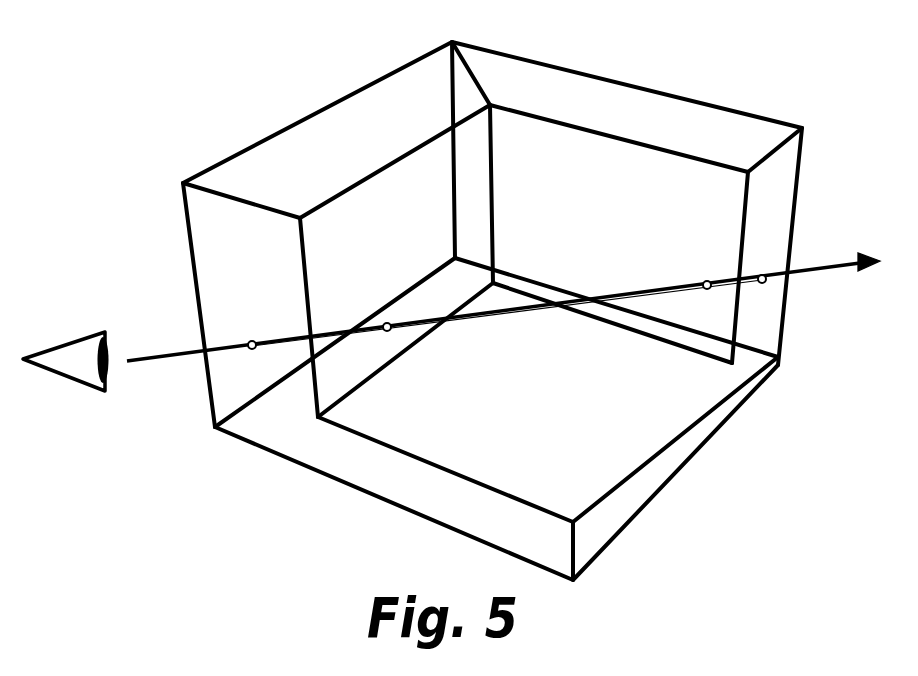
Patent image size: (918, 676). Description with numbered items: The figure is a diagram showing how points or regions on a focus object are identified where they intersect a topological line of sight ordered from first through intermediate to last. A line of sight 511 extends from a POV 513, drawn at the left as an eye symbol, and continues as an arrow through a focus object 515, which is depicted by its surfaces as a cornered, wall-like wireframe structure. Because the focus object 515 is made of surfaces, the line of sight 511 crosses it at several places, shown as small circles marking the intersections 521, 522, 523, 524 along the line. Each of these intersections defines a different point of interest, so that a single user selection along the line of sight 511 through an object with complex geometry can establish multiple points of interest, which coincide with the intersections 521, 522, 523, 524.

The line of sight 511 is at (158, 360).
The POV 513 is at (66, 376).
The focus object 515 is at (244, 151).
The intersection 521 is at (274, 306).
The intersection 522 is at (383, 323).
The intersection 523 is at (709, 281).
The intersection 524 is at (763, 274).